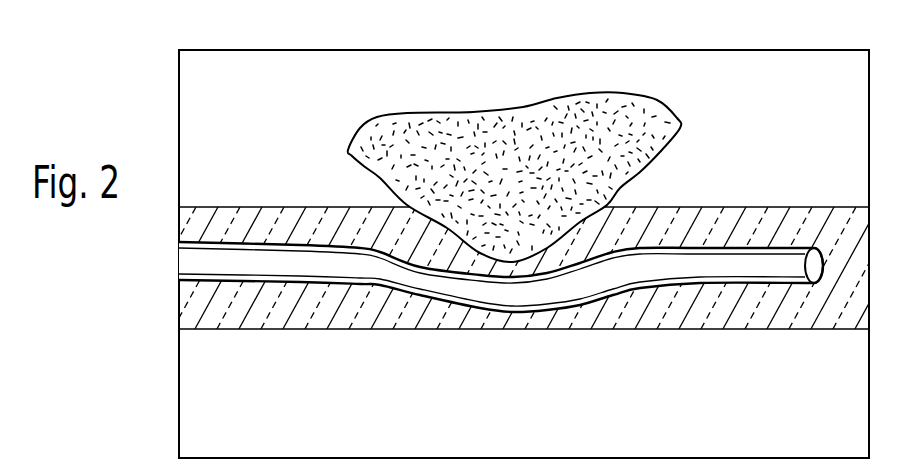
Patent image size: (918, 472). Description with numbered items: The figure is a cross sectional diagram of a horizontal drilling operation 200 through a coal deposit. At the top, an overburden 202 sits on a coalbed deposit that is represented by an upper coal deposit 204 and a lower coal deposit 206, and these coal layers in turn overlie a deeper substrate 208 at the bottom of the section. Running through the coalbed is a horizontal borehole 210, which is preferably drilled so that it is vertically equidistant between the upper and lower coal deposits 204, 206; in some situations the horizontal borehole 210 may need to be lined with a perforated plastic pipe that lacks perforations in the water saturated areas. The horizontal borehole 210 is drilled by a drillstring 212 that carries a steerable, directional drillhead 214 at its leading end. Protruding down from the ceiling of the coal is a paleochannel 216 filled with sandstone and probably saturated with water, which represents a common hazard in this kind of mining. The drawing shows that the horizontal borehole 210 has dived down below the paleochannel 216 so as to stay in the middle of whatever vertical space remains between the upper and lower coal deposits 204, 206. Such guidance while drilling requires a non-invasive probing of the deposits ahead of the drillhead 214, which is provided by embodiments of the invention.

The horizontal drilling operation 200 is at (327, 30).
The overburden 202 is at (262, 132).
The upper coal deposit 204 is at (373, 230).
The lower coal deposit 206 is at (303, 318).
The deeper substrate 208 is at (444, 392).
The horizontal borehole 210 is at (726, 286).
The drillstring 212 is at (735, 272).
The steerable directional drillhead 214 is at (817, 256).
The paleochannel 216 is at (504, 176).